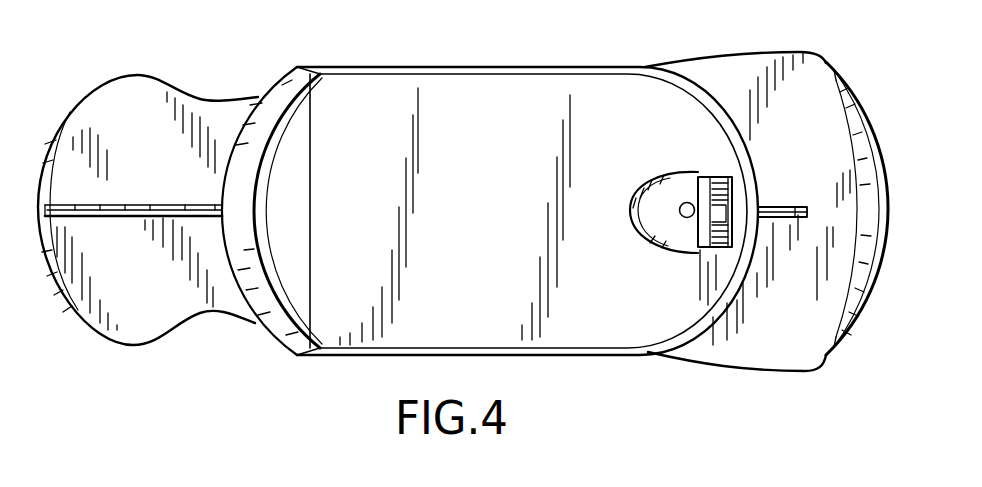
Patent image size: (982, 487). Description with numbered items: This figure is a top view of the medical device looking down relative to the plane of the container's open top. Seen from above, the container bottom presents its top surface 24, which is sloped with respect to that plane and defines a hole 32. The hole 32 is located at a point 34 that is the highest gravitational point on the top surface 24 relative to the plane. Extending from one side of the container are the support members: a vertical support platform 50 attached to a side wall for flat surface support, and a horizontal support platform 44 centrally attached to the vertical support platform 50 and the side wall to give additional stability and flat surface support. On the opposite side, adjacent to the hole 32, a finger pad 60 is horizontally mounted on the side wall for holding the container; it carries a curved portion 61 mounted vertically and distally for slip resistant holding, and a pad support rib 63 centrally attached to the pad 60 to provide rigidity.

The top surface 24 is at (490, 95).
The hole 32 is at (688, 202).
The point 34 is at (653, 218).
The horizontal support platform 44 is at (145, 313).
The vertical support platform 50 is at (135, 204).
The finger pad 60 is at (788, 355).
The curved portion 61 is at (887, 202).
The pad support rib 63 is at (780, 205).